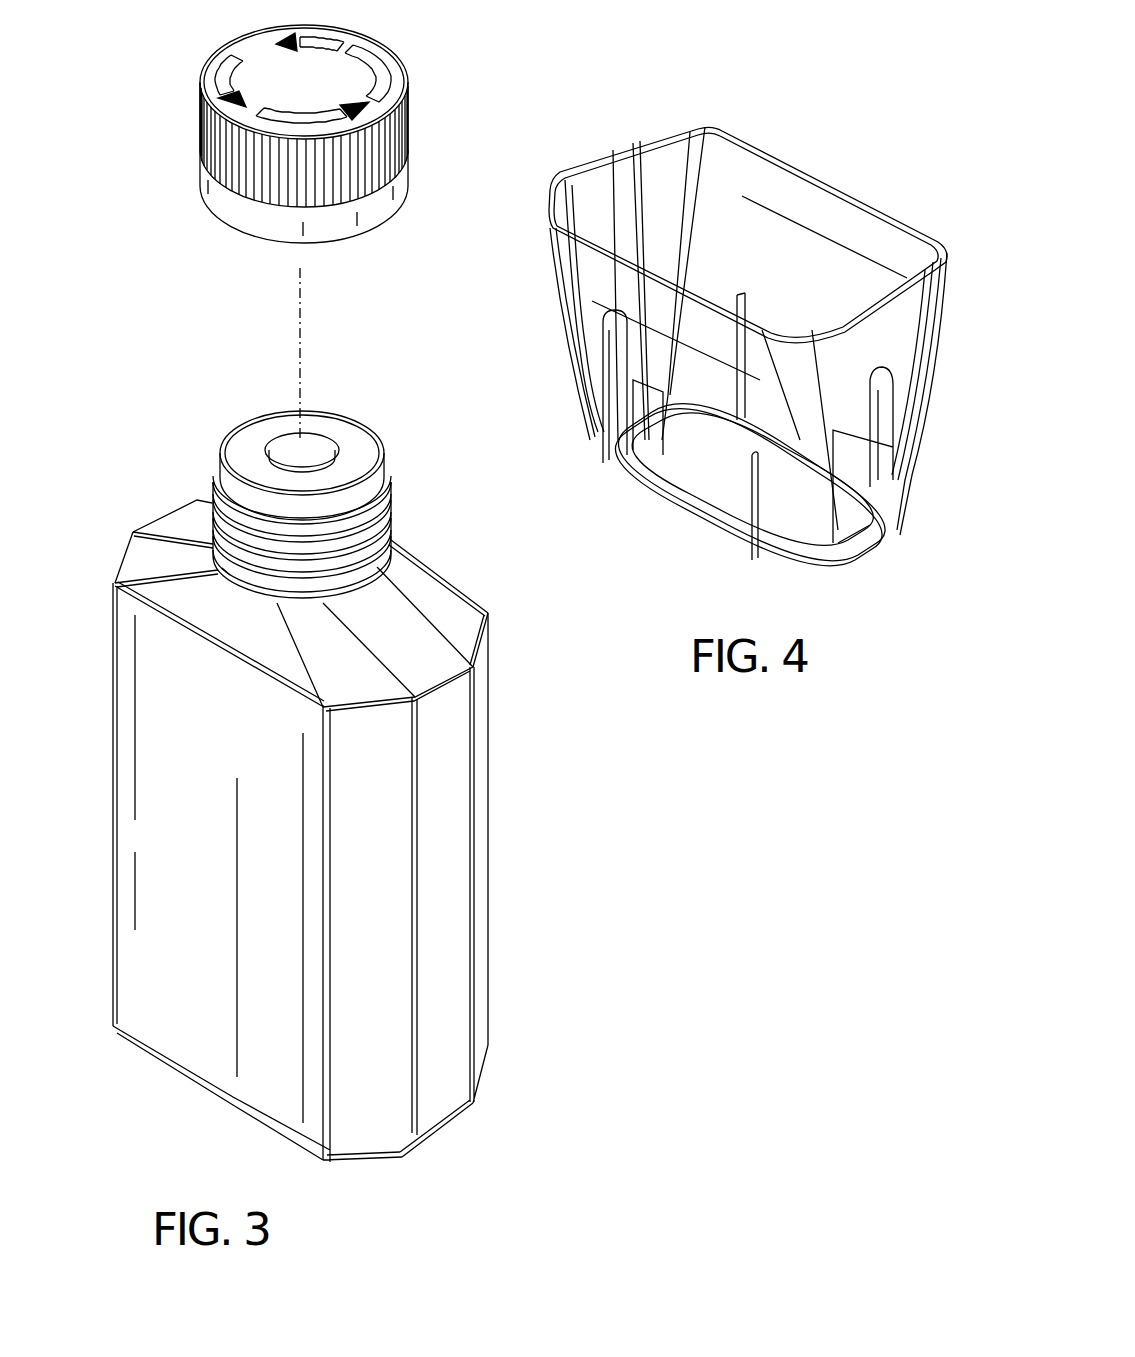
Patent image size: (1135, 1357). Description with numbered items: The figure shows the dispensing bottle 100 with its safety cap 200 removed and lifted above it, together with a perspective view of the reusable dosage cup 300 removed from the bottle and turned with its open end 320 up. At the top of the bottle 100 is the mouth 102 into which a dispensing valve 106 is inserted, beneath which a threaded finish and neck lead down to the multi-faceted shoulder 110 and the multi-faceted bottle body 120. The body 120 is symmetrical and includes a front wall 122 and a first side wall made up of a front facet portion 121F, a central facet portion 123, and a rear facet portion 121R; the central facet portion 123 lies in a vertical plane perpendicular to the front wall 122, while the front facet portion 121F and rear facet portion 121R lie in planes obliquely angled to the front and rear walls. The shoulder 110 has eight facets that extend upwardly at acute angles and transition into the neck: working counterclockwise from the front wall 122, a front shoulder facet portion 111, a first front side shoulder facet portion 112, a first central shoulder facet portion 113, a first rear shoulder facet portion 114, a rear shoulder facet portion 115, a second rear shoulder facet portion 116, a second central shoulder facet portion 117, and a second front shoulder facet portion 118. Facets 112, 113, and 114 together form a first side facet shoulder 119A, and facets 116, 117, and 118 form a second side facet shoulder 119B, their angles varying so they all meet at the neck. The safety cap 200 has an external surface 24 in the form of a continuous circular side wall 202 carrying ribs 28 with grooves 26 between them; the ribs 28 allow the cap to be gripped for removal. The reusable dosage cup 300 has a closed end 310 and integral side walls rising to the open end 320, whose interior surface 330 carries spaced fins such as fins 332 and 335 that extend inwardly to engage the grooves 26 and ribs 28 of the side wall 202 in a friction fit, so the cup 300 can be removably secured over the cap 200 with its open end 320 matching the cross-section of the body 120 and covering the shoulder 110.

In FIG. 3, the bottle 100 is at (319, 788).
In FIG. 3, the mouth 102 is at (266, 410).
In FIG. 3, the dispensing valve 106 is at (336, 428).
In FIG. 3, the multi-faceted shoulder 110 is at (130, 600).
In FIG. 3, the front shoulder facet portion 111 is at (203, 627).
In FIG. 3, the first front side shoulder facet portion 112 is at (320, 676).
In FIG. 3, the first central shoulder facet portion 113 is at (397, 633).
In FIG. 3, the first rear shoulder facet portion 114 is at (450, 608).
In FIG. 3, the rear shoulder facet portion 115 is at (404, 527).
In FIG. 3, the second rear shoulder facet portion 116 is at (212, 500).
In FIG. 3, the second central shoulder facet portion 117 is at (172, 517).
In FIG. 3, the second front shoulder facet portion 118 is at (132, 555).
In FIG. 3, the first side facet shoulder 119A is at (436, 679).
In FIG. 3, the second side facet shoulder 119B is at (141, 525).
In FIG. 3, the multi-faceted bottle body 120 is at (113, 920).
In FIG. 3, the front facet portion 121F is at (363, 1112).
In FIG. 3, the rear facet portion 121R is at (482, 1043).
In FIG. 3, the front wall 122 is at (198, 1040).
In FIG. 3, the central facet portion 123 is at (443, 1095).
In FIG. 3, the safety cap 200 is at (293, 134).
In FIG. 3, the external surface 24 is at (406, 100).
In FIG. 3, the grooves 26 is at (200, 168).
In FIG. 3, the ribs 28 is at (200, 122).
In FIG. 3, the continuous circular side wall 202 is at (410, 157).
In FIG. 4, the reusable dosage cup 300 is at (704, 343).
In FIG. 4, the closed end 310 is at (656, 525).
In FIG. 4, the open end 320 is at (748, 128).
In FIG. 4, the interior surface 330 is at (828, 293).
In FIG. 4, the fin 332 is at (847, 513).
In FIG. 4, the fin 335 is at (626, 357).